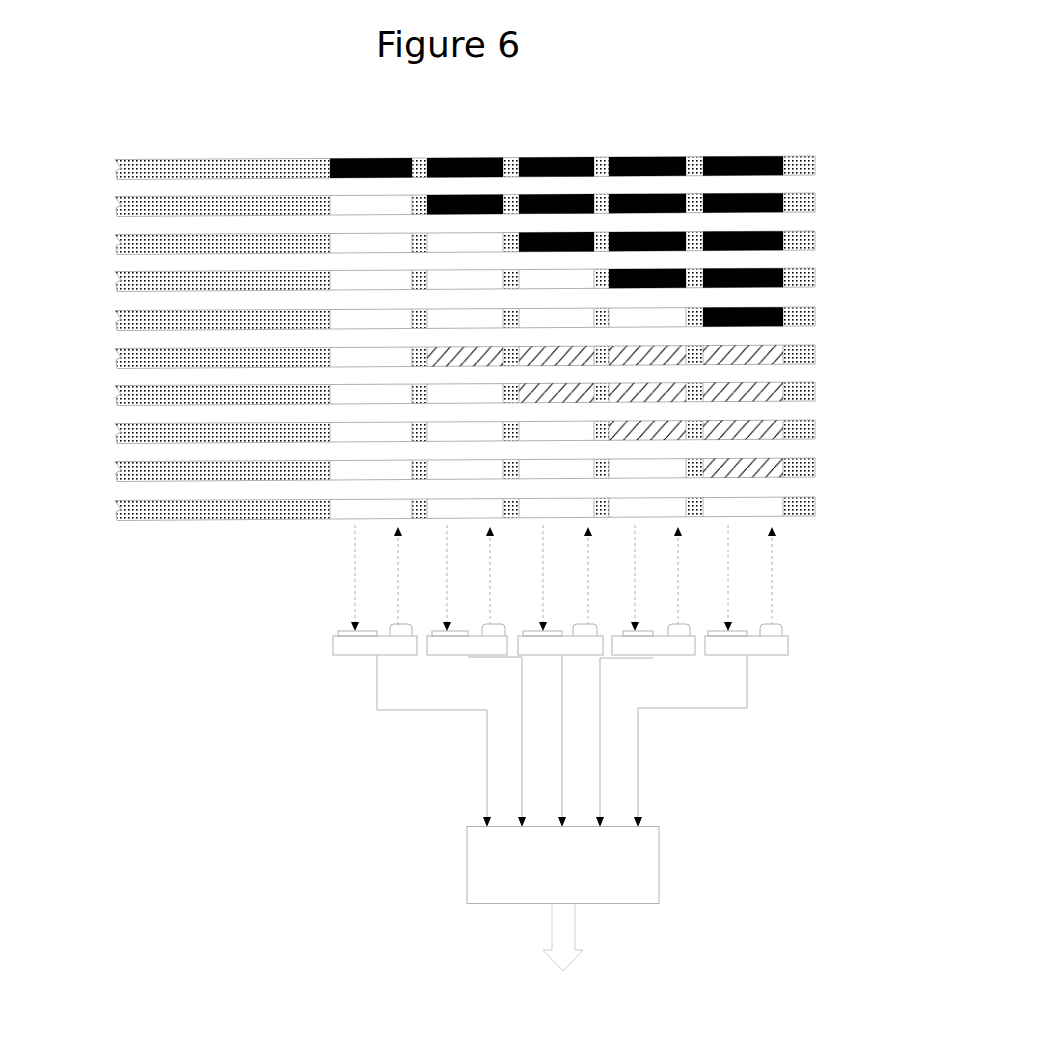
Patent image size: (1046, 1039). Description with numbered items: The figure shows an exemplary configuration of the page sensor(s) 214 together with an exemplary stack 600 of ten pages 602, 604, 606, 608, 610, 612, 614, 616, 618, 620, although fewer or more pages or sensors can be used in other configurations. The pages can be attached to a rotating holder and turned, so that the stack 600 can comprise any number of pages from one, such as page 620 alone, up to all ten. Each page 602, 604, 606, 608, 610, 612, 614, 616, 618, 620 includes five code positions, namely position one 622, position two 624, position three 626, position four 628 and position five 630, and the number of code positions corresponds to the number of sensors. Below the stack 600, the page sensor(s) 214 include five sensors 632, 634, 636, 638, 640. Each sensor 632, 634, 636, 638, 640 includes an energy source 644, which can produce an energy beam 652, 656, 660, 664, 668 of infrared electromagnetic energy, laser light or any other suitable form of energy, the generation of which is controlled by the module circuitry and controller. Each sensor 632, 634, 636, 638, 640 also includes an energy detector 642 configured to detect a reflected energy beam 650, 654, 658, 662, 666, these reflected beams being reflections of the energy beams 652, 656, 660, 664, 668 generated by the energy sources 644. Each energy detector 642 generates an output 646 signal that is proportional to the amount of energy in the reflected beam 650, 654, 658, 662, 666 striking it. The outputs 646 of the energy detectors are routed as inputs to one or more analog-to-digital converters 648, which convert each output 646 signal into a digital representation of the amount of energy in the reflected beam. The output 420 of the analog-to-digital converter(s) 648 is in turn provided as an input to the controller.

The stack 600 is at (469, 316).
The page 602 is at (103, 170).
The page 604 is at (103, 207).
The page 606 is at (103, 245).
The page 608 is at (103, 282).
The page 610 is at (103, 321).
The page 612 is at (103, 359).
The page 614 is at (103, 396).
The page 616 is at (103, 434).
The page 618 is at (103, 472).
The page 620 is at (103, 511).
The position one 622 is at (373, 144).
The position two 624 is at (465, 138).
The position three 626 is at (556, 138).
The position four 628 is at (648, 138).
The position five 630 is at (740, 150).
The sensor 632 is at (333, 644).
The sensor 634 is at (433, 657).
The sensor 636 is at (545, 656).
The sensor 638 is at (690, 656).
The sensor 640 is at (789, 645).
The energy detector 642 is at (337, 633).
The energy source 644 is at (402, 631).
The output signal 646 is at (520, 777).
The analog-to-digital converter 648 is at (467, 868).
The reflected energy beam 650 is at (350, 549).
The energy beam 652 is at (396, 593).
The reflected energy beam 654 is at (447, 573).
The energy beam 656 is at (490, 573).
The reflected energy beam 658 is at (543, 573).
The energy beam 660 is at (588, 573).
The reflected energy beam 662 is at (635, 573).
The energy beam 664 is at (678, 573).
The reflected energy beam 666 is at (730, 568).
The energy beam 668 is at (775, 600).
The page sensor(s) 214 is at (544, 778).
The output 420 is at (552, 928).